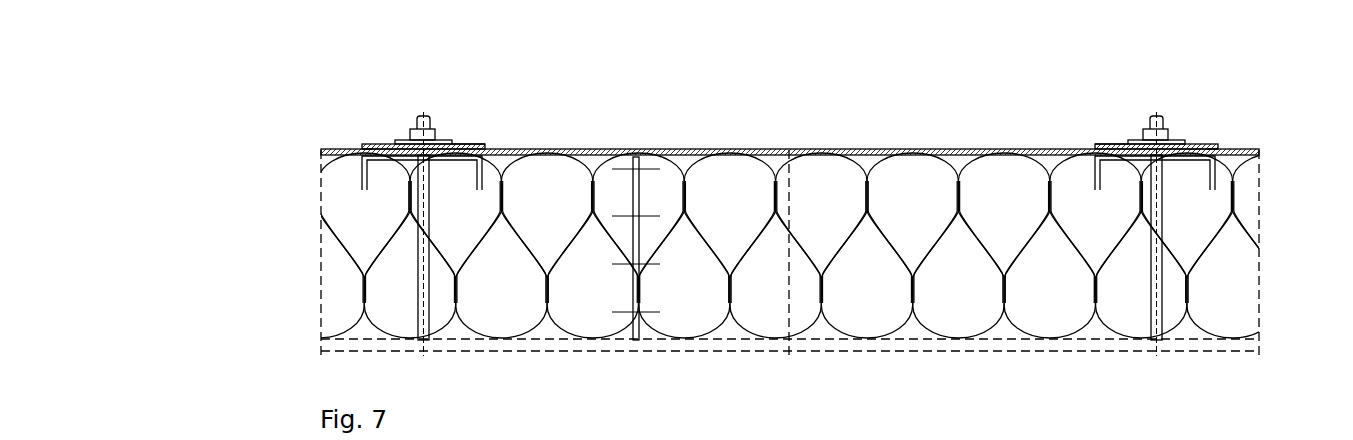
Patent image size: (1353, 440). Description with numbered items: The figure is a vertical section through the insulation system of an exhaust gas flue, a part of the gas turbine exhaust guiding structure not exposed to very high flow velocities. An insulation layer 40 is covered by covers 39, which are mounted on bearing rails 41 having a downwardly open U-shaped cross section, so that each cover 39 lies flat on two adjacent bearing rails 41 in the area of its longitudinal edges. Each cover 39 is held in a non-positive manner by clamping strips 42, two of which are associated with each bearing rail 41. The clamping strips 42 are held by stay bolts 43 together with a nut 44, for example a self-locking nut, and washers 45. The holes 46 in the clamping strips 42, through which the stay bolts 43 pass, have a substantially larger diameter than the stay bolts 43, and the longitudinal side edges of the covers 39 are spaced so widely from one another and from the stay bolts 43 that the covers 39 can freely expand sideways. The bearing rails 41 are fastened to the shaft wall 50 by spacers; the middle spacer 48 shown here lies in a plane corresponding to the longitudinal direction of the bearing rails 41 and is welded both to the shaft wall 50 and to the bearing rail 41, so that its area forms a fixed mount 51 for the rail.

The cover 39 is at (338, 149).
The insulation layer 40 is at (911, 341).
The bearing rail 41 is at (363, 174).
The clamping strip 42 is at (373, 149).
The stay bolt 43 is at (420, 128).
The nut 44 is at (436, 144).
The washer 45 is at (455, 144).
The hole 46 is at (413, 144).
The middle spacer 48 is at (430, 317).
The shaft wall 50 is at (732, 343).
The fixed mount 51 is at (792, 76).